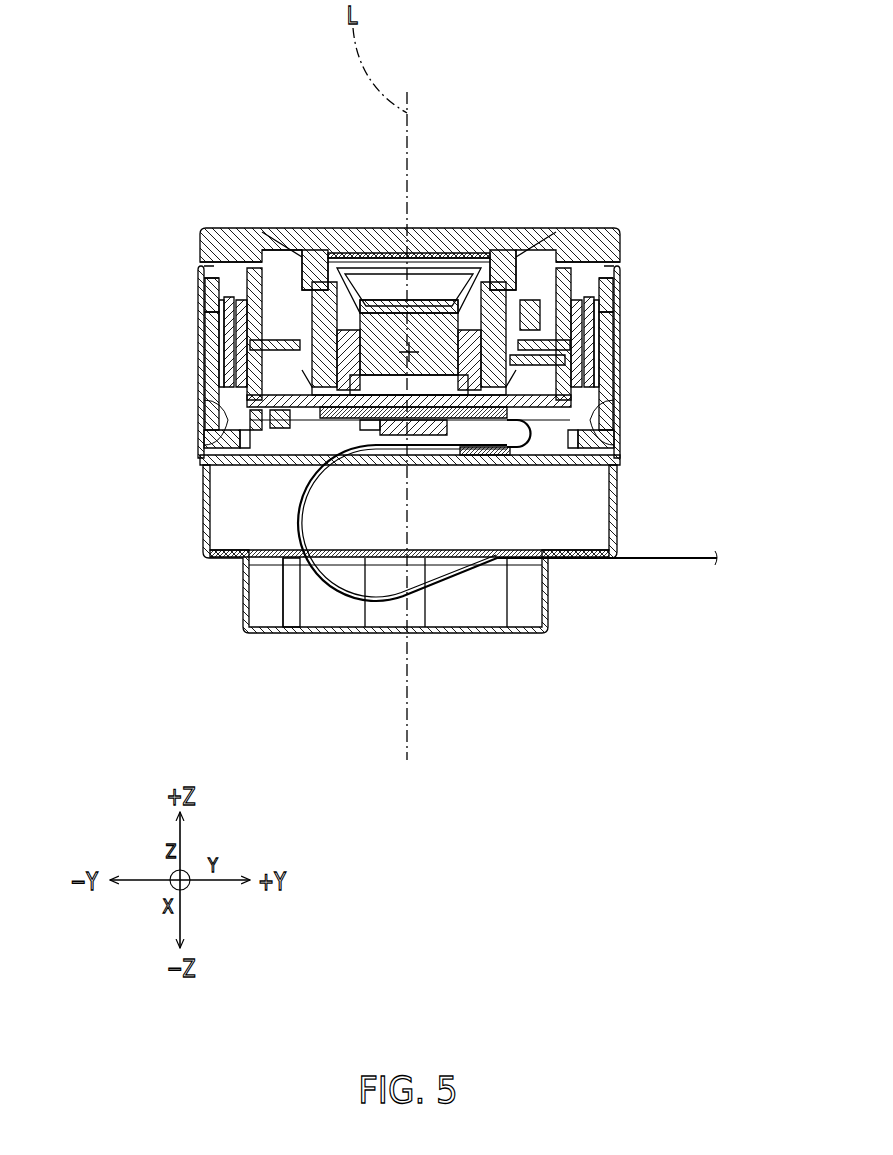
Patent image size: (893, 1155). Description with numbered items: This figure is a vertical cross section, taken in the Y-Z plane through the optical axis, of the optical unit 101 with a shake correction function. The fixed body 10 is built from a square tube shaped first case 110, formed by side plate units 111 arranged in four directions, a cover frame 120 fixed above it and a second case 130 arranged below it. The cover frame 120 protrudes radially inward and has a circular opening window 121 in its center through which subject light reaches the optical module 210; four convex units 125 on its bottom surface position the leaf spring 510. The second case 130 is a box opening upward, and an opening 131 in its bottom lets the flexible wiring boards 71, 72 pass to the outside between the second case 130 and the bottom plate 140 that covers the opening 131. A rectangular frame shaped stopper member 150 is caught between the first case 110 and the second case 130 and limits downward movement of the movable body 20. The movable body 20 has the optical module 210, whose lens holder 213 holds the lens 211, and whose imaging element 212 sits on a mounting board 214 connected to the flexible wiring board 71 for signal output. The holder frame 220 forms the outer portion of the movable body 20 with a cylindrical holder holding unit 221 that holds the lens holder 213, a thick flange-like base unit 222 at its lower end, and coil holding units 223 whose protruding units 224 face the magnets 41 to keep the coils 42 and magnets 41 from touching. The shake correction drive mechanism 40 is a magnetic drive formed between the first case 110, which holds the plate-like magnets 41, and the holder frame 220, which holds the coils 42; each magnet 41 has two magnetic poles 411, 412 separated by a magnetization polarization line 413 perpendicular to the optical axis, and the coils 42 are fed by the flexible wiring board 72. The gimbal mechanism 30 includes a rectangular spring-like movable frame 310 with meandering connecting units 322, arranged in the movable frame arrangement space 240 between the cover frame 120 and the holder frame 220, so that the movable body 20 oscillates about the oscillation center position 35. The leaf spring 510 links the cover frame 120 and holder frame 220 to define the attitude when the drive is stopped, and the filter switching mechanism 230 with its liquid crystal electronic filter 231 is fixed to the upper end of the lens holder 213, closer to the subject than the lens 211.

The fixed body 10 is at (197, 268).
The movable body 20 is at (250, 446).
The gimbal mechanism 30 is at (541, 300).
The oscillation center position 35 is at (430, 441).
The shake correction drive mechanism 40 is at (87, 262).
The magnet 41 is at (204, 313).
The coil 42 is at (204, 290).
The flexible wiring board 71 is at (390, 630).
The flexible wiring board 72 is at (348, 620).
The optical unit 101 is at (216, 116).
The first case 110 is at (622, 278).
The side plate unit 111 is at (200, 420).
The cover frame 120 is at (600, 232).
The opening window 121 is at (300, 236).
The convex unit 125 is at (560, 262).
The second case 130 is at (625, 522).
The opening 131 is at (300, 600).
The bottom plate 140 is at (520, 640).
The stopper member 150 is at (612, 468).
The optical module 210 is at (388, 300).
The lens 211 is at (425, 306).
The imaging element 212 is at (470, 300).
The lens holder 213 is at (456, 312).
The mounting board 214 is at (403, 470).
The holder frame 220 is at (340, 253).
The holder holding unit 221 is at (258, 250).
The base unit 222 is at (282, 436).
The coil holding unit 223 is at (212, 386).
The protruding unit 224 is at (218, 362).
The filter switching mechanism 230 is at (318, 243).
The electronic filter 231 is at (356, 262).
The movable frame arrangement space 240 is at (500, 446).
The movable frame 310 is at (540, 441).
The connecting unit 322 is at (258, 436).
The magnetic pole 411 is at (201, 262).
The magnetic pole 412 is at (218, 445).
The magnetization polarization line 413 is at (212, 330).
The leaf spring 510 is at (530, 300).